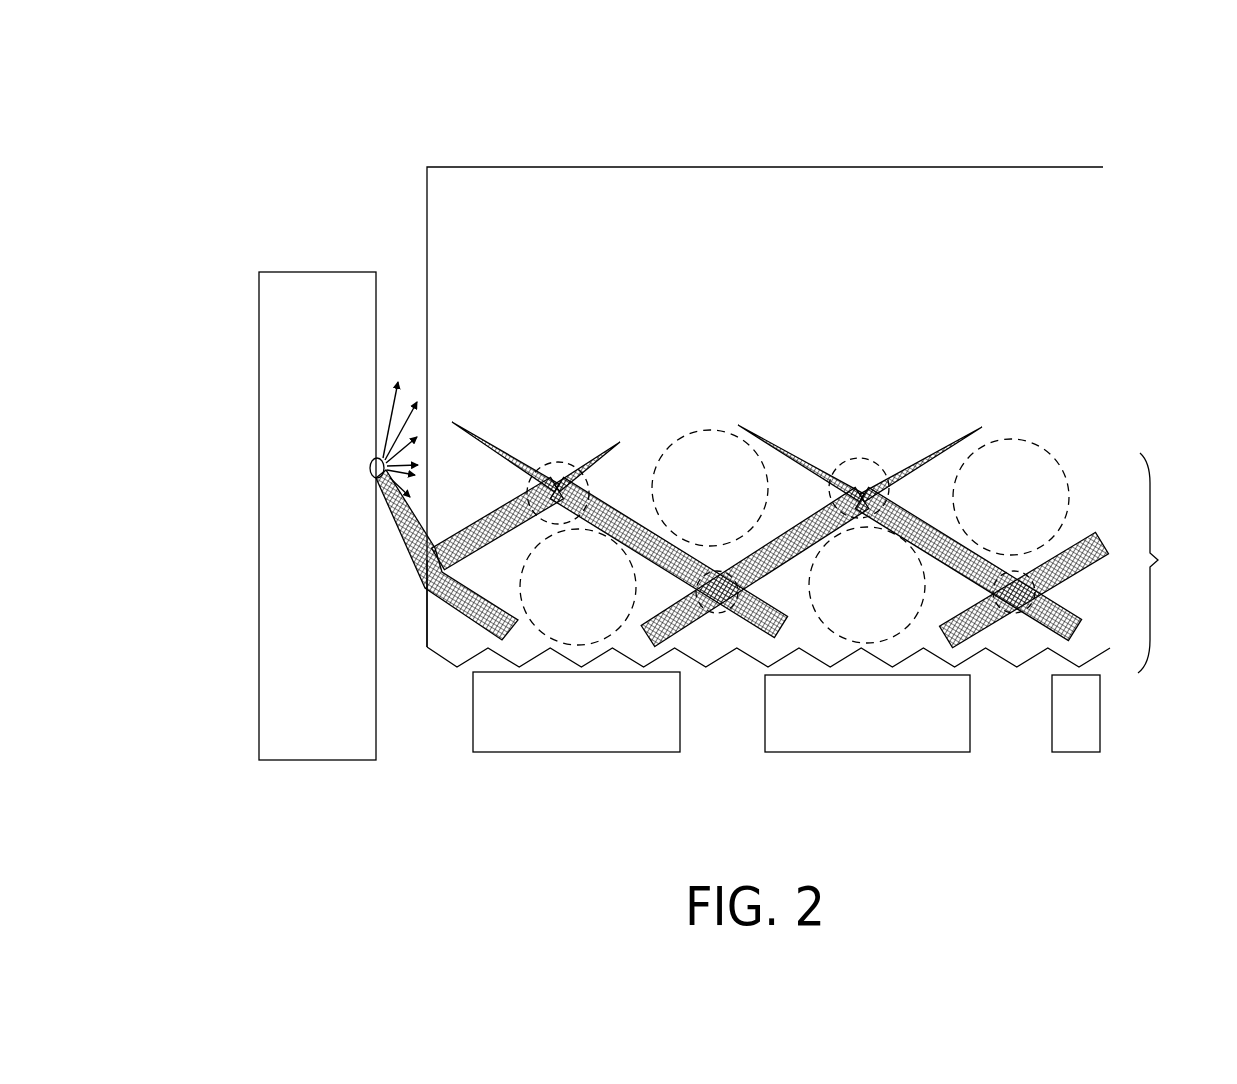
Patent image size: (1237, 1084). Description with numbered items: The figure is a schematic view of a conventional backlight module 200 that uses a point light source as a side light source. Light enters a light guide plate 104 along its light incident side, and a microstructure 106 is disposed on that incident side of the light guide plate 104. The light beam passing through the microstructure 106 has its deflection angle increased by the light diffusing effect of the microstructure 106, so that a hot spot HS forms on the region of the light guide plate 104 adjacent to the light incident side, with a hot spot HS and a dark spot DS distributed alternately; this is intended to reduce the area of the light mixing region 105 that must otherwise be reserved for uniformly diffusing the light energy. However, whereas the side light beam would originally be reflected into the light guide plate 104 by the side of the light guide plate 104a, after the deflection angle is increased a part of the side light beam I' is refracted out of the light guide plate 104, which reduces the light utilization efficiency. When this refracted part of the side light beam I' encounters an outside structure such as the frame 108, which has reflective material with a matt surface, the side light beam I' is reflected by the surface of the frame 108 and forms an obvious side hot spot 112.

The conventional backlight module 200 is at (327, 103).
The light guide plate 104 is at (427, 230).
The side of the light guide plate 104a is at (425, 610).
The light mixing region 105 is at (1183, 563).
The microstructure 106 is at (1010, 670).
The frame 108 is at (258, 517).
The side hot spot 112 is at (372, 460).
The hot spot HS is at (563, 462).
The dark spot DS is at (822, 545).
The side light beam I' is at (742, 631).